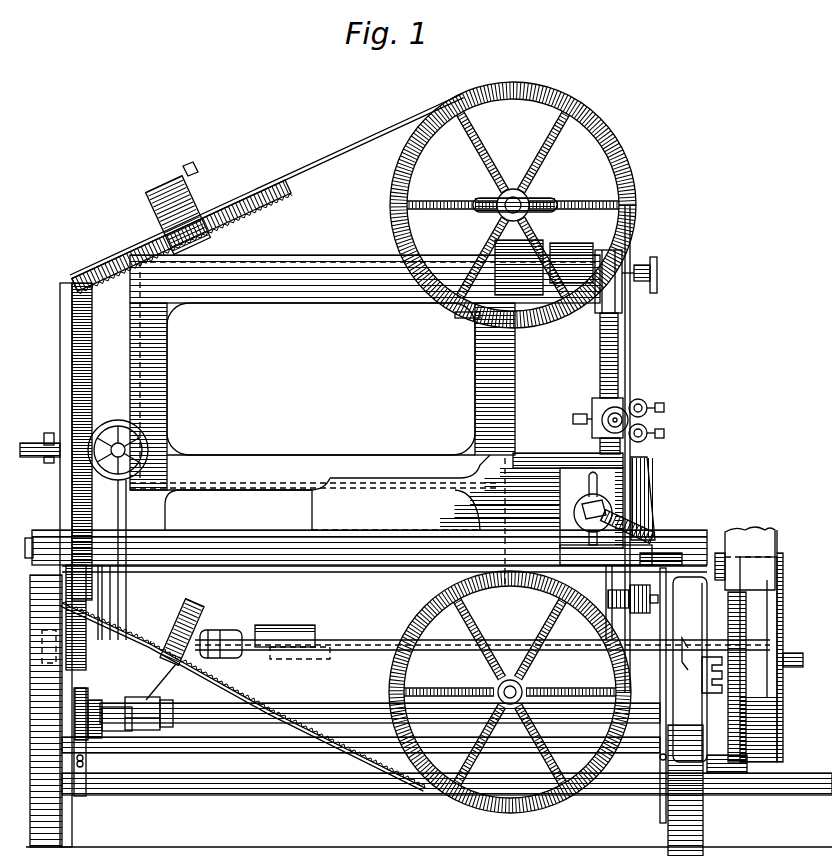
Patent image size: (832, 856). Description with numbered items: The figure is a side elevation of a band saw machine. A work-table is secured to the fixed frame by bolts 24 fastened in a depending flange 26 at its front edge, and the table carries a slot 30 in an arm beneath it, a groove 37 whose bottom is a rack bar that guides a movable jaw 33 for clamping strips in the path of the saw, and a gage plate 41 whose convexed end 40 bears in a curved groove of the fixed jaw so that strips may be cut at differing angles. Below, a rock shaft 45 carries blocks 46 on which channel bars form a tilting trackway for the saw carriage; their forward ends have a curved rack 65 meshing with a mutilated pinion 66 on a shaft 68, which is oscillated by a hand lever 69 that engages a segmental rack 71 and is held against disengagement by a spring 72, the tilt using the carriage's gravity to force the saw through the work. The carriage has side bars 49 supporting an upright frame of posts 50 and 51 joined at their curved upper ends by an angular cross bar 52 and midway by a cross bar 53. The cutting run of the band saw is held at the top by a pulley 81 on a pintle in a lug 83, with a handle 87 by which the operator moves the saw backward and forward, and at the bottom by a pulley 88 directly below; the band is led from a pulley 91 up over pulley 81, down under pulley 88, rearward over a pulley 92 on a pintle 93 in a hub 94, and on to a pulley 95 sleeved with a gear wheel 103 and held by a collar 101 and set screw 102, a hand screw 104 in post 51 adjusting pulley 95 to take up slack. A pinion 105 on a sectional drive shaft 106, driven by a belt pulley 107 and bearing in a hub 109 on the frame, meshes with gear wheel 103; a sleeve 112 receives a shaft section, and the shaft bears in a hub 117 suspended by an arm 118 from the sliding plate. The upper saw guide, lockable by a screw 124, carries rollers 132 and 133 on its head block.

The bolts 24 is at (33, 540).
The depending flange 26 is at (354, 566).
The slot 30 is at (650, 537).
The movable jaw 33 is at (574, 470).
The groove 37 is at (614, 517).
The convexed end 40 is at (650, 462).
The gage plate 41 is at (387, 478).
The rock shaft 45 is at (238, 797).
The blocks 46 is at (83, 794).
The side bars 49 is at (143, 710).
The post 50 is at (166, 368).
The post 51 is at (476, 378).
The angular cross bar 52 is at (315, 302).
The cross bar 53 is at (302, 396).
The curved rack 65 is at (75, 696).
The pinion 66 is at (86, 736).
The shaft 68 is at (303, 747).
The hand lever 69 is at (743, 652).
The segmental rack 71 is at (700, 707).
The spring 72 is at (772, 704).
The pulley 81 is at (632, 150).
The lug 83 is at (462, 316).
The handle 87 is at (532, 198).
The pulley 88 is at (552, 812).
The pulley 91 is at (284, 174).
The pulley 92 is at (184, 606).
The pintle 93 is at (220, 629).
The hub 94 is at (142, 692).
The pulley 95 is at (62, 338).
The collar 101 is at (52, 436).
The set screw 102 is at (46, 434).
The gear wheel 103 is at (92, 366).
The hand screw 104 is at (148, 447).
The pinion 105 is at (66, 626).
The drive shaft 106 is at (357, 640).
The belt pulley 107 is at (775, 530).
The hub 109 is at (636, 602).
The sleeve 112 is at (290, 626).
The hub 117 is at (108, 560).
The arm 118 is at (166, 507).
The screw 124 is at (657, 275).
The roller 132 is at (644, 400).
The roller 133 is at (656, 432).